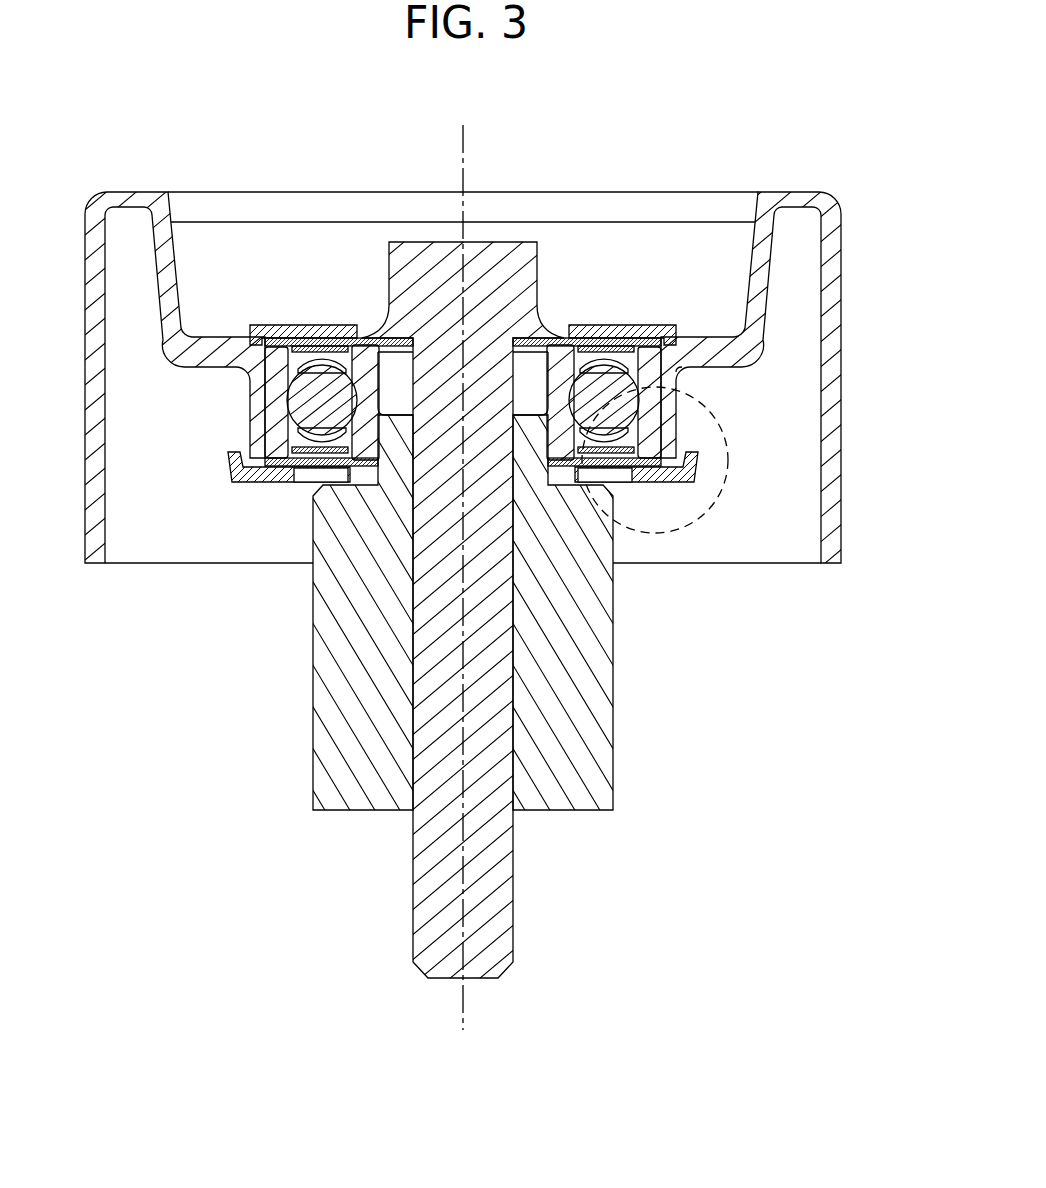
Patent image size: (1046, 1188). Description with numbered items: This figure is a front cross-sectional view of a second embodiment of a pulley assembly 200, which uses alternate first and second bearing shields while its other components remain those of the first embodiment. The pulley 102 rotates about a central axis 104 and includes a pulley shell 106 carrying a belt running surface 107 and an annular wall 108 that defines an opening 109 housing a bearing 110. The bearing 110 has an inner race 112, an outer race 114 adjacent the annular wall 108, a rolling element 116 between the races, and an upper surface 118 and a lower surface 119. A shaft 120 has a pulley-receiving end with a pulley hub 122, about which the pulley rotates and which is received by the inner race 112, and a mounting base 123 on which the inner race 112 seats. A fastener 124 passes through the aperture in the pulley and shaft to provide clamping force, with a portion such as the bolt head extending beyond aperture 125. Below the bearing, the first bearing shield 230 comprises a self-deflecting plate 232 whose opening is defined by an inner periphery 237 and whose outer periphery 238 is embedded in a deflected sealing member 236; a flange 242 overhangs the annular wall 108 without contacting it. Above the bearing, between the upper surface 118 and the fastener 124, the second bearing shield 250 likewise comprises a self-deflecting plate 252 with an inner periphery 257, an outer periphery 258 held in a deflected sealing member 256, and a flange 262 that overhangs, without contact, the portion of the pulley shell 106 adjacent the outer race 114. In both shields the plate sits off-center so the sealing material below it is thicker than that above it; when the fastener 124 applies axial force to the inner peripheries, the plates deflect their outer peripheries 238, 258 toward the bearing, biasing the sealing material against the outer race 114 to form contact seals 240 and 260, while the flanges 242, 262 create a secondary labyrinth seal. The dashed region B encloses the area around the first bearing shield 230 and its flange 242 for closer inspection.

The pulley assembly 200 is at (808, 128).
The pulley 102 is at (732, 190).
The rotational axis 104 is at (463, 128).
The pulley shell 106 is at (832, 360).
The belt running surface 107 is at (840, 420).
The annular wall 108 is at (672, 408).
The opening 109 is at (668, 432).
The bearing 110 is at (285, 421).
The inner race 112 is at (363, 377).
The outer race 114 is at (277, 367).
The rolling element 116 is at (318, 415).
The upper surface 118 is at (318, 352).
The lower surface 119 is at (287, 475).
The shaft 120 is at (613, 742).
The pulley hub 122 is at (523, 447).
The mounting base 123 is at (572, 526).
The fastener 124 is at (512, 870).
The aperture 125 is at (584, 336).
The first bearing shield 230 is at (719, 550).
The self-deflecting plate 232 is at (598, 471).
The deflected sealing member 236 is at (628, 470).
The inner periphery 237 is at (365, 465).
The outer periphery 238 is at (610, 471).
The contact seal 240 is at (275, 486).
The flange 242 is at (693, 478).
The second bearing shield 250 is at (684, 318).
The self-deflecting plate 252 is at (590, 340).
The deflected sealing member 256 is at (668, 336).
The inner periphery 257 is at (566, 334).
The outer periphery 258 is at (690, 364).
The contact seal 260 is at (292, 338).
The flange 262 is at (250, 333).
The detail region B is at (706, 392).